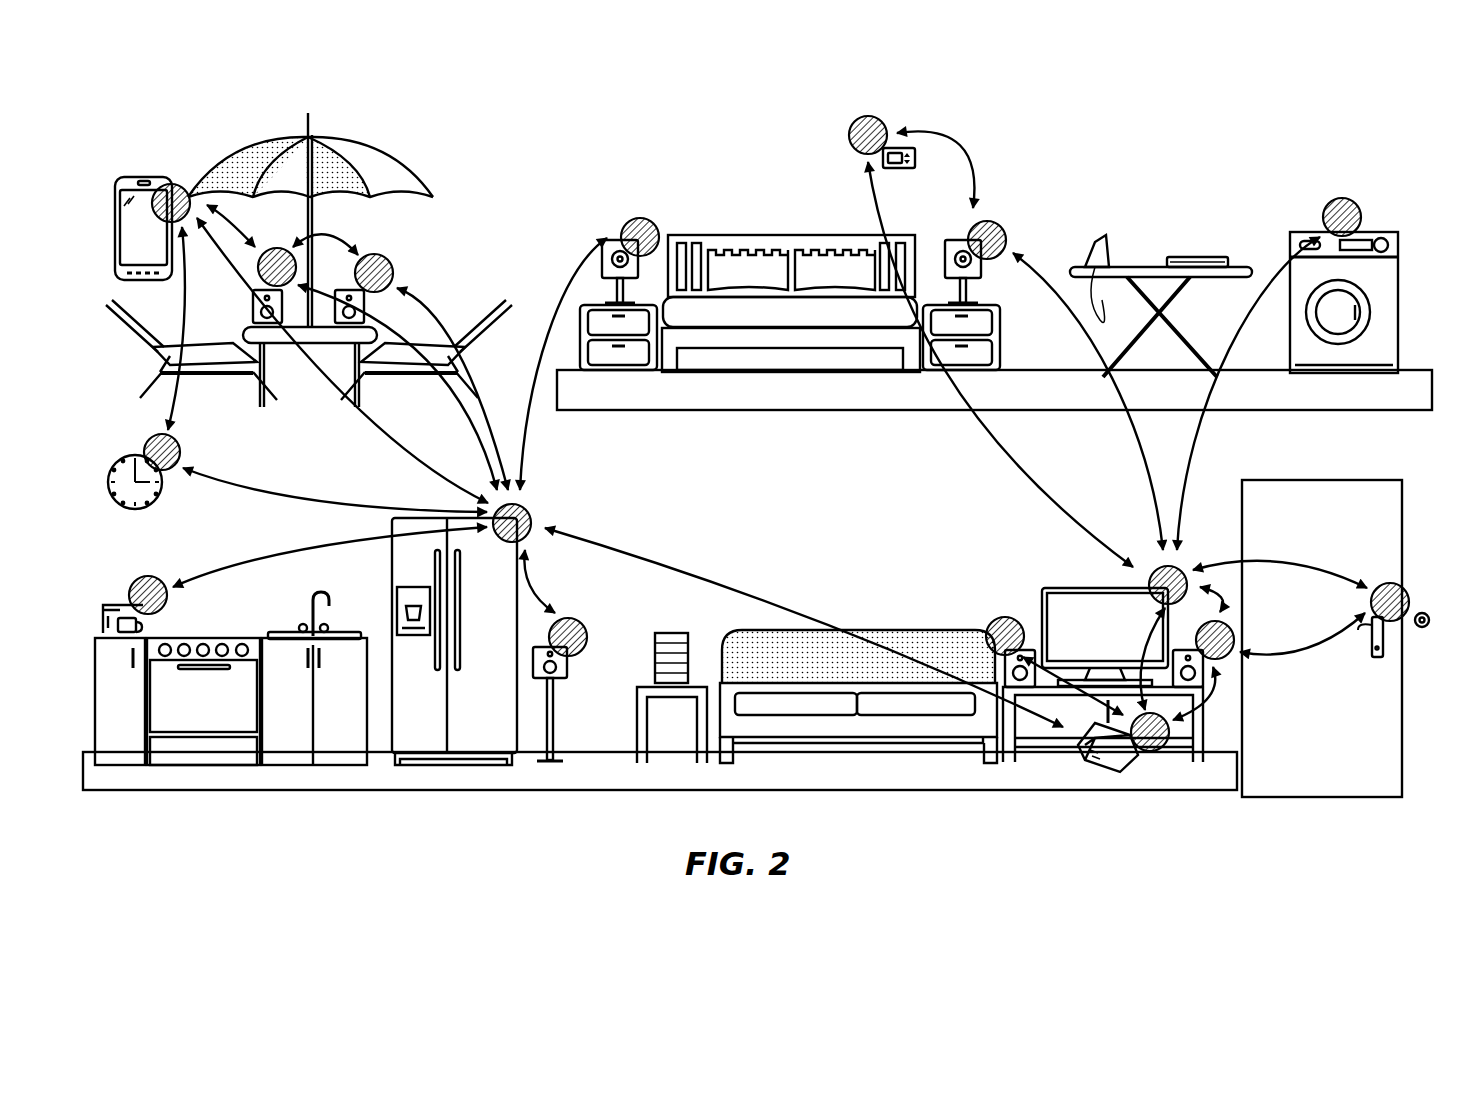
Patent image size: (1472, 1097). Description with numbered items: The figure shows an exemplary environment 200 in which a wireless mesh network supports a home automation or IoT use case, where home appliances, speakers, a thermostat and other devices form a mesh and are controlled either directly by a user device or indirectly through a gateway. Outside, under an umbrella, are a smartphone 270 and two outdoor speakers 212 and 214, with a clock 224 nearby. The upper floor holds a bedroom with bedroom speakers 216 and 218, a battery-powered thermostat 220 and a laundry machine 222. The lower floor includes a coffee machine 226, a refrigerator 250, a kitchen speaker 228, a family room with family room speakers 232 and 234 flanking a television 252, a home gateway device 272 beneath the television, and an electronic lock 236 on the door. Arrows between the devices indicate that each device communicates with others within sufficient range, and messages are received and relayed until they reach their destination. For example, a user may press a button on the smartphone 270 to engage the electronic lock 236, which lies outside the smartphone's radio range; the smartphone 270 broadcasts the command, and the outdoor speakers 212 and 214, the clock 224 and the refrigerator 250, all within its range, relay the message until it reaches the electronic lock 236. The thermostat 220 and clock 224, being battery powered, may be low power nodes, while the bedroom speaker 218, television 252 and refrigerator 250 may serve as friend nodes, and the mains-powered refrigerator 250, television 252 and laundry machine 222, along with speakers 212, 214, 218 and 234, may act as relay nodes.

The environment 200 is at (1372, 113).
The outdoor speaker 212 is at (278, 248).
The outdoor speaker 214 is at (388, 258).
The bedroom speaker 216 is at (645, 215).
The bedroom speaker 218 is at (993, 218).
The thermostat 220 is at (874, 114).
The laundry machine 222 is at (1350, 197).
The clock 224 is at (181, 446).
The coffee machine 226 is at (154, 575).
The kitchen speaker 228 is at (584, 616).
The family room speaker 232 is at (996, 616).
The family room speaker 234 is at (1238, 636).
The electronic lock 236 is at (1386, 582).
The refrigerator 250 is at (536, 510).
The television 252 is at (1156, 564).
The smartphone 270 is at (170, 184).
The home gateway device 272 is at (1158, 753).